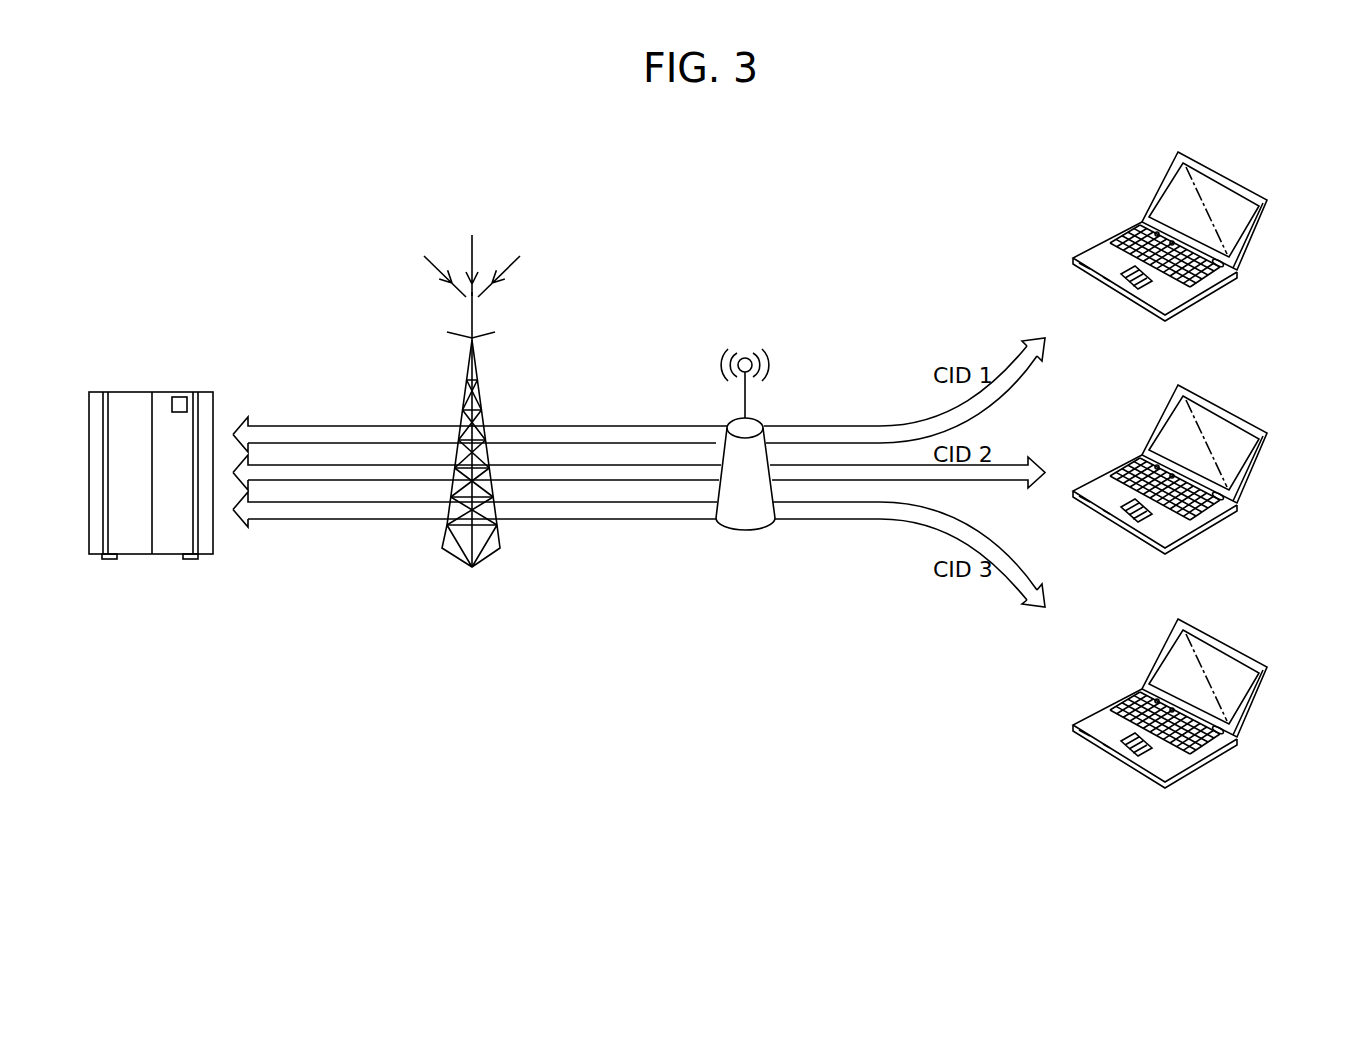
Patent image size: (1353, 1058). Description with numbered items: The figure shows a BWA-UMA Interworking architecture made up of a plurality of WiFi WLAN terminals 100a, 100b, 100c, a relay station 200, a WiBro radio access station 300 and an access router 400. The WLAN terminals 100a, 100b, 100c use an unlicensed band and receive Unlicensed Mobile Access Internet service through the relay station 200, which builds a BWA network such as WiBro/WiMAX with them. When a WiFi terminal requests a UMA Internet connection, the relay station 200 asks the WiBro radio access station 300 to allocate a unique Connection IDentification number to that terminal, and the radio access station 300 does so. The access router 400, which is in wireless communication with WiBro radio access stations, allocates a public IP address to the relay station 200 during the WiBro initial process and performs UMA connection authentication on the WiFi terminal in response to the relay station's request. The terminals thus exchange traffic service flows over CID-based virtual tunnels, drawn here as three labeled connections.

The access router 400 is at (128, 392).
The WiBro radio access station 300 is at (482, 408).
The relay station 200 is at (753, 420).
The WiFi WLAN terminal 100a is at (1222, 172).
The WiFi WLAN terminal 100b is at (1222, 405).
The WiFi WLAN terminal 100c is at (1222, 639).